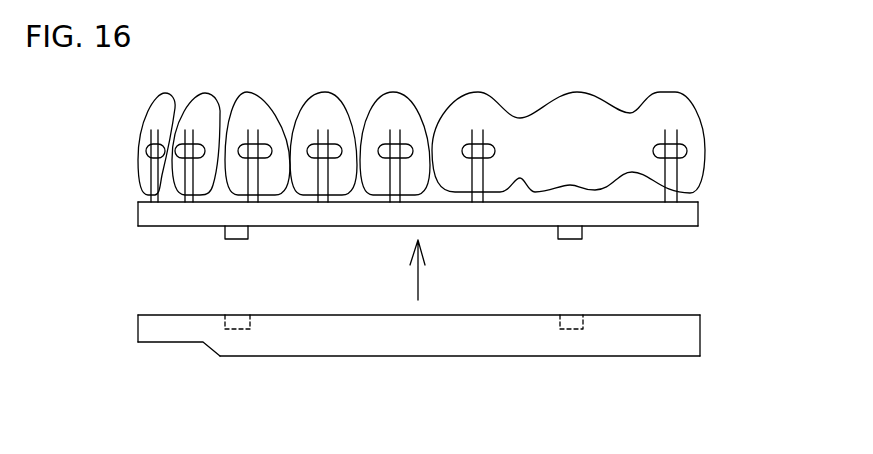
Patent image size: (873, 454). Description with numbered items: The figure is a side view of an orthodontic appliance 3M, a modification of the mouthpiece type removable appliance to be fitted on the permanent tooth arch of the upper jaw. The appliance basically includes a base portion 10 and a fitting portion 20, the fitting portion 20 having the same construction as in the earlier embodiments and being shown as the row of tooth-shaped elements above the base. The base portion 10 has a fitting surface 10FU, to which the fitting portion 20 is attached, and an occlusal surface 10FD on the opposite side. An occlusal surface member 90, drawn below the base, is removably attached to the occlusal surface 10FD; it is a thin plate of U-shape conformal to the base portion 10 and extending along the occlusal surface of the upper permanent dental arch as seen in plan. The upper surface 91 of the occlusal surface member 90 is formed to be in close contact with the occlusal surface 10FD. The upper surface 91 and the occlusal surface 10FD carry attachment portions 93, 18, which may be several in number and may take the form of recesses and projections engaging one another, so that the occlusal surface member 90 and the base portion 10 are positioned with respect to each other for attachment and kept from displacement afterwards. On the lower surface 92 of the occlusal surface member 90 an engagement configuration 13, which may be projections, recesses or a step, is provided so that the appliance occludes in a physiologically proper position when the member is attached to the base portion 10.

The fitting portion 20 is at (703, 90).
The orthodontic appliance 3M is at (733, 129).
The base portion 10 is at (138, 211).
The fitting surface 10FU is at (688, 188).
The occlusal surface 10FD is at (684, 226).
The attachment portion 18 is at (237, 239).
The occlusal surface member 90 is at (700, 333).
The upper surface 91 is at (637, 315).
The lower surface 92 is at (533, 356).
The attachment portion 93 is at (235, 316).
The engagement configuration 13 is at (213, 350).